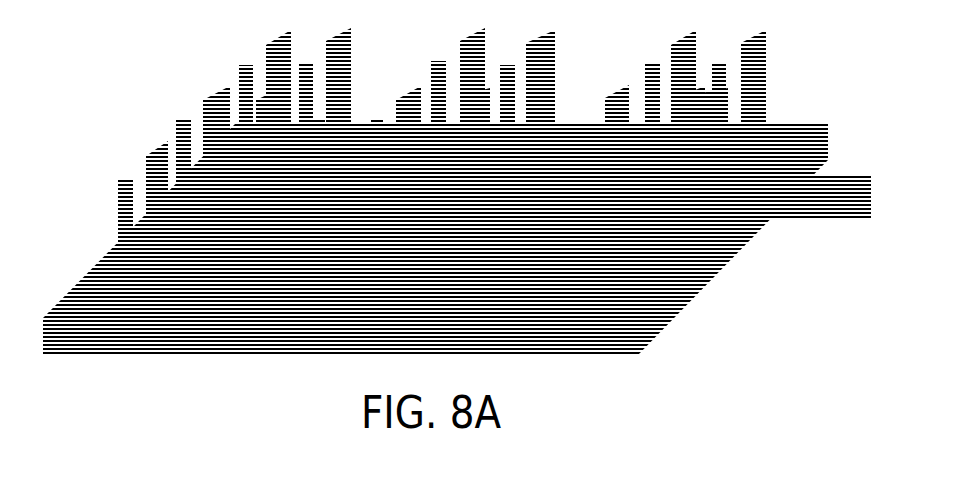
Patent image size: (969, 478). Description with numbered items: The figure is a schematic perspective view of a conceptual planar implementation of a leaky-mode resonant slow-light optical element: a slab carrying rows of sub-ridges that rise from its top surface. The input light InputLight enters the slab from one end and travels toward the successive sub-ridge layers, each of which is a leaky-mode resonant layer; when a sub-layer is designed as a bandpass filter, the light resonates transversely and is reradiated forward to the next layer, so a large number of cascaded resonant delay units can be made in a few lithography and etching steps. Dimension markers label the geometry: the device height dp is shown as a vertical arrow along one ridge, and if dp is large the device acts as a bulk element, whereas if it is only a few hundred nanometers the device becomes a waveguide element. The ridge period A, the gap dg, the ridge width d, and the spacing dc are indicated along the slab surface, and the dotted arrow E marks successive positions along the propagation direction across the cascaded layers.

The input light InputLight is at (818, 196).
The grating period Λ A is at (633, 62).
The device height dp is at (768, 25).
The grating gap width dg is at (507, 286).
The pillar width d is at (527, 298).
The pillar spacing dc is at (578, 286).
The electric field positions E1-E4 E is at (657, 242).